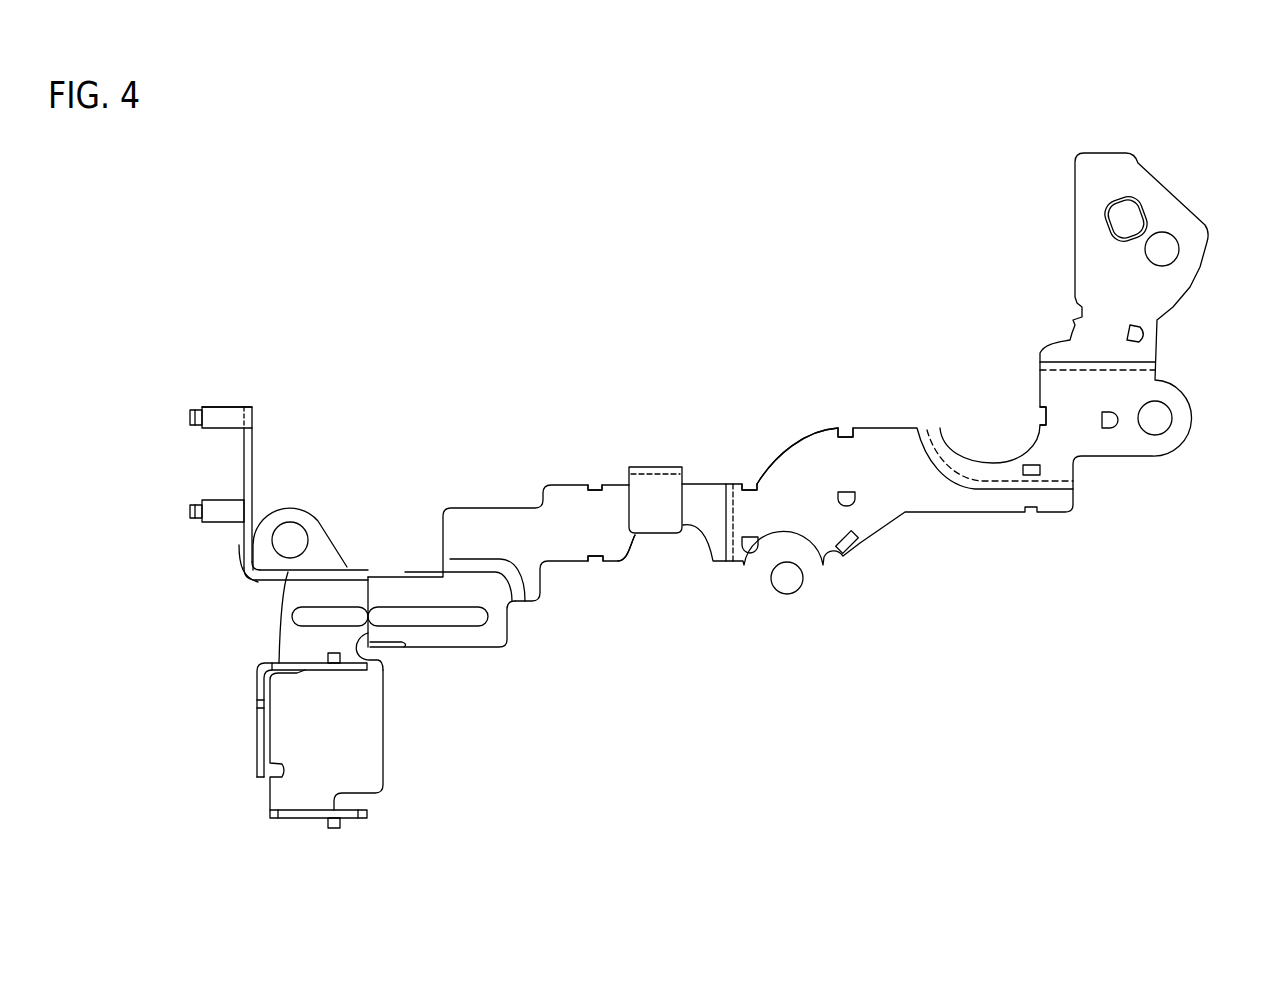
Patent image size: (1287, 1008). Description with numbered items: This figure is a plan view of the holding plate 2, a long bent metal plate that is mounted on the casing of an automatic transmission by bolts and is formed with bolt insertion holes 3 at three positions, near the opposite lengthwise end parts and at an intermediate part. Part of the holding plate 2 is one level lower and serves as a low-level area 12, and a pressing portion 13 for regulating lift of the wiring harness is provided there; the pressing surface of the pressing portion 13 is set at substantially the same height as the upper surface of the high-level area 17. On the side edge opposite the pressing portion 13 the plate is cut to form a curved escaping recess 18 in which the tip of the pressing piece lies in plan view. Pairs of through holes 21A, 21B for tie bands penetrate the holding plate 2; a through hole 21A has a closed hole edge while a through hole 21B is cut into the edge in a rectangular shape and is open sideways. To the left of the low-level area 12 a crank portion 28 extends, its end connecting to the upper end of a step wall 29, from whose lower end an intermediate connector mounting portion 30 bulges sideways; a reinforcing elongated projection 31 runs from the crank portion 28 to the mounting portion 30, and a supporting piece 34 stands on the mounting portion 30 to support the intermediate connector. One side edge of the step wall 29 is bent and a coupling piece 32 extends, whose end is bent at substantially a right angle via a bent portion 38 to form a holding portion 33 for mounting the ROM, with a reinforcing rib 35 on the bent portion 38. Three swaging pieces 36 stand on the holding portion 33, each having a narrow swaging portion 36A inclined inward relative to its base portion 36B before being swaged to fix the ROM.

The holding plate 2 is at (482, 481).
The bolt insertion hole 3 is at (290, 530).
The low-level area 12 is at (693, 510).
The pressing portion 13 is at (652, 487).
The high-level area 17 is at (800, 467).
The escaping recess 18 is at (633, 543).
The through hole 21A is at (750, 553).
The through hole 21B is at (597, 480).
The crank portion 28 is at (490, 645).
The step wall 29 is at (357, 667).
The intermediate connector mounting portion 30 is at (367, 777).
The reinforcing elongated projection 31 is at (397, 613).
The coupling piece 32 is at (288, 570).
The holding portion 33 is at (245, 462).
The supporting piece 34 is at (293, 815).
The reinforcing rib 35 is at (237, 557).
The swaging piece 36 is at (218, 412).
The swaging portion 36A is at (188, 417).
The base portion 36B is at (233, 407).
The bent portion 38 is at (247, 573).